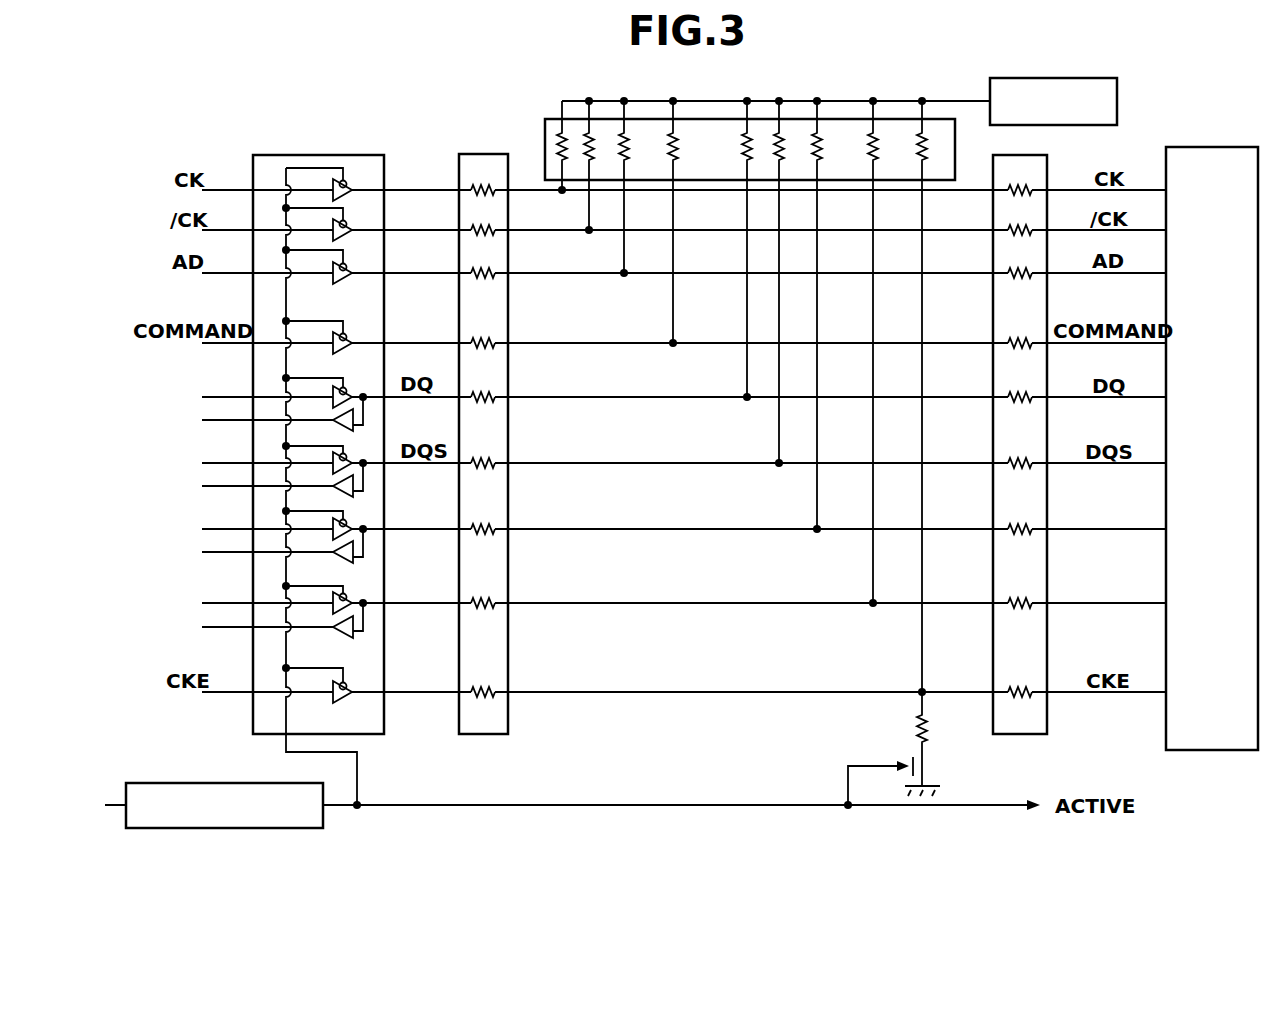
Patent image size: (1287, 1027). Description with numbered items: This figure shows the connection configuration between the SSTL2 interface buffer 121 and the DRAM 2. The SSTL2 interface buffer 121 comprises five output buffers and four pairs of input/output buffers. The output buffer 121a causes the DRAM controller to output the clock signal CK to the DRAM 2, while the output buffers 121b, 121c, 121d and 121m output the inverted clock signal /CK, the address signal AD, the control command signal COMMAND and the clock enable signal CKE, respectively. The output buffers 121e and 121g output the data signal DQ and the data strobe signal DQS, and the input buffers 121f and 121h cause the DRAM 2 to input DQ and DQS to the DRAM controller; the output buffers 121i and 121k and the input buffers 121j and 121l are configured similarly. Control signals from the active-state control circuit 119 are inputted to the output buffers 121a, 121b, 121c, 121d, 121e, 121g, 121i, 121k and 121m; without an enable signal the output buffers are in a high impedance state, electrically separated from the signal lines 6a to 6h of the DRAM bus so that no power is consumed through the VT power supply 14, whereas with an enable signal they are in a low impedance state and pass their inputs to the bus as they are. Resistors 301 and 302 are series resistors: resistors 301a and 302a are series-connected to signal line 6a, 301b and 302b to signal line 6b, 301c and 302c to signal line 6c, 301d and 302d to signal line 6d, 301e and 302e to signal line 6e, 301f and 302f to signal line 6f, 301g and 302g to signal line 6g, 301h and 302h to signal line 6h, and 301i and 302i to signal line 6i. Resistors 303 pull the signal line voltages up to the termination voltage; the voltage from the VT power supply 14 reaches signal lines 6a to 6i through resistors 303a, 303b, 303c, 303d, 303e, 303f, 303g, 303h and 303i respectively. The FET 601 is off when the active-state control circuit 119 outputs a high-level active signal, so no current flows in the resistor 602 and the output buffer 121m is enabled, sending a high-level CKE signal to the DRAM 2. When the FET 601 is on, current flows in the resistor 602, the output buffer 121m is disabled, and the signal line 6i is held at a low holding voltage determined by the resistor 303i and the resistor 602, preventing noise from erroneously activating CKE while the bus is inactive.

The DRAM 2 is at (1235, 147).
The VT power supply 14 is at (1117, 101).
The active-state control circuit 119 is at (210, 783).
The SSTL2 interface buffer 121 is at (300, 155).
The output buffer 121a is at (350, 184).
The output buffer 121b is at (350, 224).
The output buffer 121c is at (350, 267).
The output buffer 121d is at (350, 337).
The output buffer 121e is at (350, 393).
The input buffer 121f is at (340, 428).
The output buffer 121g is at (350, 458).
The input buffer 121h is at (358, 496).
The output buffer 121i is at (350, 524).
The input buffer 121j is at (358, 562).
The output buffer 121k is at (350, 598).
The input buffer 121l is at (358, 636).
The output buffer 121m is at (352, 702).
The resistors 301 is at (498, 154).
The resistor 301a is at (471, 188).
The resistor 301b is at (471, 226).
The resistor 301c is at (471, 269).
The resistor 301d is at (471, 339).
The resistor 301e is at (471, 393).
The resistor 301f is at (471, 459).
The resistor 301g is at (471, 525).
The resistor 301h is at (471, 599).
The resistor 301i is at (471, 688).
The resistors 302 is at (1050, 158).
The resistor 302a is at (1010, 186).
The resistor 302b is at (1008, 227).
The resistor 302c is at (1008, 270).
The resistor 302d is at (1008, 339).
The resistor 302e is at (1008, 393).
The resistor 302f is at (1008, 459).
The resistor 302g is at (1008, 525).
The resistor 302h is at (1008, 599).
The resistor 302i is at (1008, 688).
The resistors 303 is at (958, 130).
The resistor 303a is at (567, 140).
The resistor 303b is at (594, 140).
The resistor 303c is at (629, 140).
The resistor 303d is at (678, 145).
The resistor 303e is at (752, 140).
The resistor 303f is at (784, 140).
The resistor 303g is at (822, 140).
The resistor 303h is at (878, 140).
The resistor 303i is at (927, 140).
The signal line 6a is at (686, 192).
The signal line 6b is at (686, 232).
The signal line 6c is at (686, 275).
The signal line 6d is at (686, 345).
The signal line 6e is at (686, 399).
The signal line 6f is at (686, 465).
The signal line 6g is at (686, 531).
The signal line 6h is at (686, 605).
The signal line 6i is at (686, 694).
The FET 601 is at (928, 767).
The resistor 602 is at (915, 729).